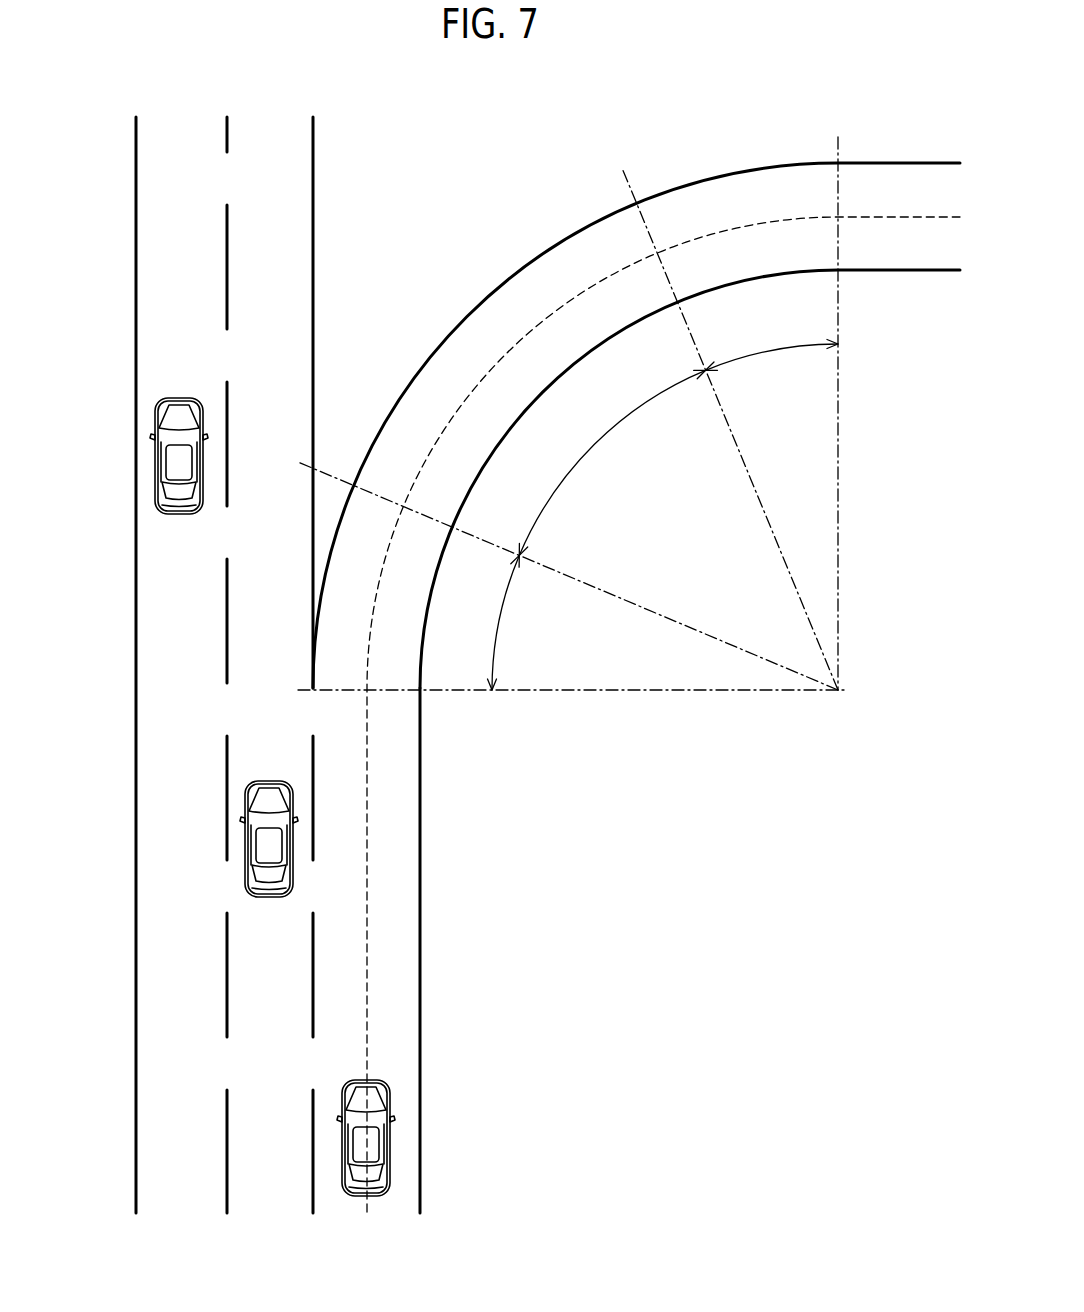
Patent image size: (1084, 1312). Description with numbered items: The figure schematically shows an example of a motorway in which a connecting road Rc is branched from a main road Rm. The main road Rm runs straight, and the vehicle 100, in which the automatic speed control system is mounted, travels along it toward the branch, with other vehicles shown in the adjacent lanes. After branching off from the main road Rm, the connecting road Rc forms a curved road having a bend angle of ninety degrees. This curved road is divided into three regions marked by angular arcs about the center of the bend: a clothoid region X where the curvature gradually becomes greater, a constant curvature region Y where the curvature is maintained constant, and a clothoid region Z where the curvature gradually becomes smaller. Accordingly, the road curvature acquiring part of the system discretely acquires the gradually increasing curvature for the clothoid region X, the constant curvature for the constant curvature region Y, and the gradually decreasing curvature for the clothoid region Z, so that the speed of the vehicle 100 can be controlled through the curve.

The main road Rm is at (173, 300).
The connecting road Rc is at (514, 305).
The vehicle 100 is at (375, 1134).
The clothoid region X is at (516, 622).
The constant curvature region Y is at (612, 462).
The clothoid region Z is at (772, 367).